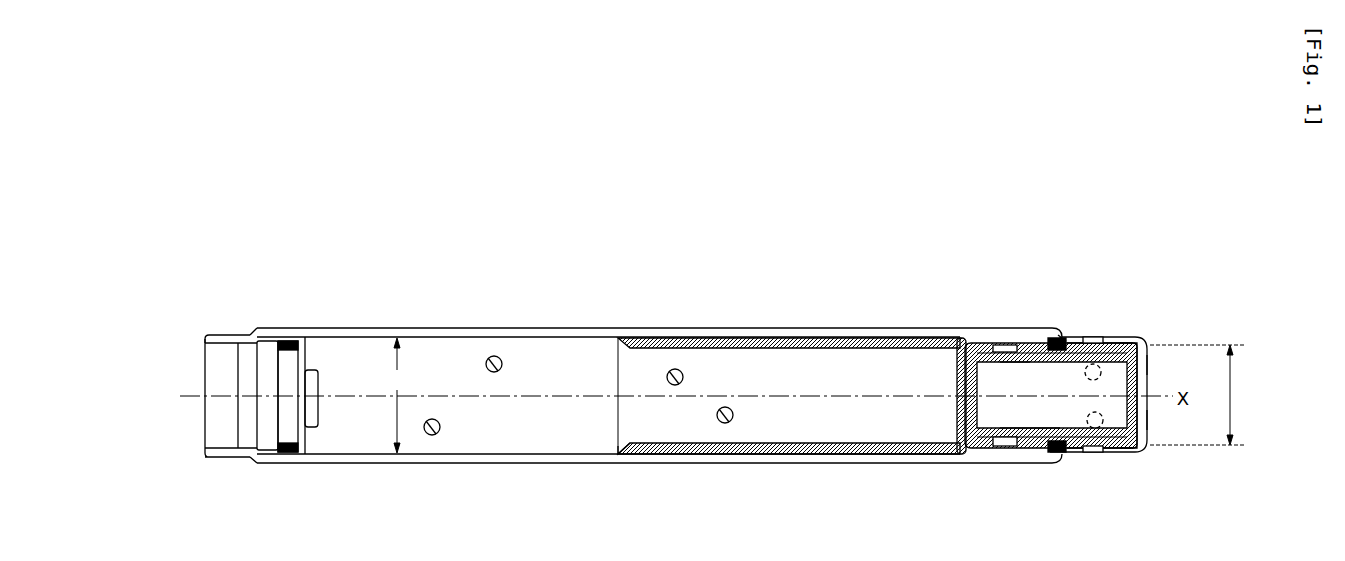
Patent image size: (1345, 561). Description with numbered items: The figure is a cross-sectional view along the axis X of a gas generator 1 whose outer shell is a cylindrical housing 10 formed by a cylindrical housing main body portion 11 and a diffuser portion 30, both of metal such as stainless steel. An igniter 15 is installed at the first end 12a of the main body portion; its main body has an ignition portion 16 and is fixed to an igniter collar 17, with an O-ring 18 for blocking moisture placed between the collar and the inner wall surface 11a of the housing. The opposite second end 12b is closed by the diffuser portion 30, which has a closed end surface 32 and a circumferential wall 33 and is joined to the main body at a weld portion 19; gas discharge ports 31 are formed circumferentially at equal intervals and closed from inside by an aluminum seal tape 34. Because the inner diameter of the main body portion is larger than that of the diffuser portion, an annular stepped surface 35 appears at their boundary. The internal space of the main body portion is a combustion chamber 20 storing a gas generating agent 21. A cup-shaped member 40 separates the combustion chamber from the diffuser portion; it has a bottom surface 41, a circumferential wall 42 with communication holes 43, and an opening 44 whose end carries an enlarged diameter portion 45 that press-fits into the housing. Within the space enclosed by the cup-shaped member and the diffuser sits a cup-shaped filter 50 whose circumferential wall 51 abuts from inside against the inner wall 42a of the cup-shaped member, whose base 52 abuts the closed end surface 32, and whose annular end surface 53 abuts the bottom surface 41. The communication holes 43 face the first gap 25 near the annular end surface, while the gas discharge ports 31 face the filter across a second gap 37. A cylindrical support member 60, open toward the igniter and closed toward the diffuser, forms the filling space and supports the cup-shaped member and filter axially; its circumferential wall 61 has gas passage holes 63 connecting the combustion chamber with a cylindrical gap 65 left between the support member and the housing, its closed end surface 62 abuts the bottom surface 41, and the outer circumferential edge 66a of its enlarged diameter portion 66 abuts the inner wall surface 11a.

The gas generator 1 is at (498, 312).
The cylindrical housing 10 is at (628, 323).
The cylindrical housing main body portion 11 is at (521, 465).
The inner wall surface 11a is at (358, 455).
The first end 12a is at (208, 333).
The second end 12b is at (1066, 458).
The igniter 15 is at (193, 370).
The ignition portion 16 is at (315, 368).
The igniter collar 17 is at (263, 452).
The O-ring 18 is at (287, 455).
The weld portion 19 is at (1063, 337).
The combustion chamber 20 is at (553, 388).
The gas generating agent 21 is at (485, 364).
The first gap 25 is at (991, 344).
The diffuser portion 30 is at (1150, 330).
The gas discharge ports 31 is at (1098, 336).
The closed end surface 32 is at (1148, 363).
The circumferential wall 33 is at (1110, 453).
The aluminum seal tape 34 is at (1080, 425).
The annular stepped surface 35 is at (1043, 455).
The second gap 37 is at (1126, 343).
The cup-shaped member 40 is at (969, 340).
The bottom surface 41 is at (982, 382).
The circumferential wall 42 is at (1020, 452).
The inner wall 42a is at (1018, 428).
The communication holes 43 is at (1013, 343).
The opening 44 is at (1043, 430).
The enlarged diameter portion 45 is at (1043, 337).
The cup-shaped filter 50 is at (1055, 340).
The circumferential wall 51 is at (1136, 452).
The base 52 is at (1147, 420).
The annular end surface 53 is at (972, 449).
The cylindrical support member 60 is at (905, 336).
The circumferential wall 61 is at (787, 337).
The closed end surface 62 is at (960, 407).
The gas passage holes 63 is at (716, 349).
The cylindrical gap 65 is at (835, 455).
The enlarged diameter portion 66 is at (616, 347).
The outer circumferential edge 66a is at (618, 457).